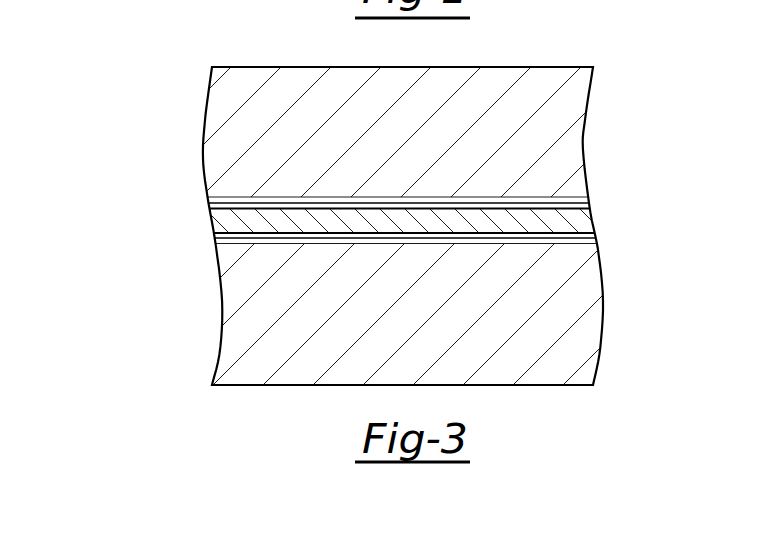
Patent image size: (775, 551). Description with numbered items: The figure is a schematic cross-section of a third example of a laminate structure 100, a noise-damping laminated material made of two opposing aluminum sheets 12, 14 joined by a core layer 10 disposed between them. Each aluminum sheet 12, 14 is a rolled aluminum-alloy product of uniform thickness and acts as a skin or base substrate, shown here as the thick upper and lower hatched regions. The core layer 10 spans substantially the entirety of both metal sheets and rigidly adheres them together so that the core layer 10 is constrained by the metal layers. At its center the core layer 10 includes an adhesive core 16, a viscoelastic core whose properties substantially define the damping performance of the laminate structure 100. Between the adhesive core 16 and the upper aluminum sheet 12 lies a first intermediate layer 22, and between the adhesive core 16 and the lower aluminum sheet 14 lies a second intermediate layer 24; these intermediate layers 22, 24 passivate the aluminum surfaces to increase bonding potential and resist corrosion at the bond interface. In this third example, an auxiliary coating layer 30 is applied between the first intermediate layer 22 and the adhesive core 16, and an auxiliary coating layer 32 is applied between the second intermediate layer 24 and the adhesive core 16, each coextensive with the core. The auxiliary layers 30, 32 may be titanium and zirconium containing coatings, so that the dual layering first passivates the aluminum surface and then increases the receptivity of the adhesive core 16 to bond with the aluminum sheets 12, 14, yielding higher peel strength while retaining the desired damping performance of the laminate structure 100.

The laminate structure 100 is at (397, 192).
The core layer 10 is at (406, 219).
The aluminum sheet 12 is at (203, 143).
The aluminum sheet 14 is at (222, 305).
The adhesive core 16 is at (212, 219).
The first intermediate layer 22 is at (208, 202).
The second intermediate layer 24 is at (215, 240).
The auxiliary coating layer 30 is at (590, 207).
The auxiliary coating layer 32 is at (597, 233).